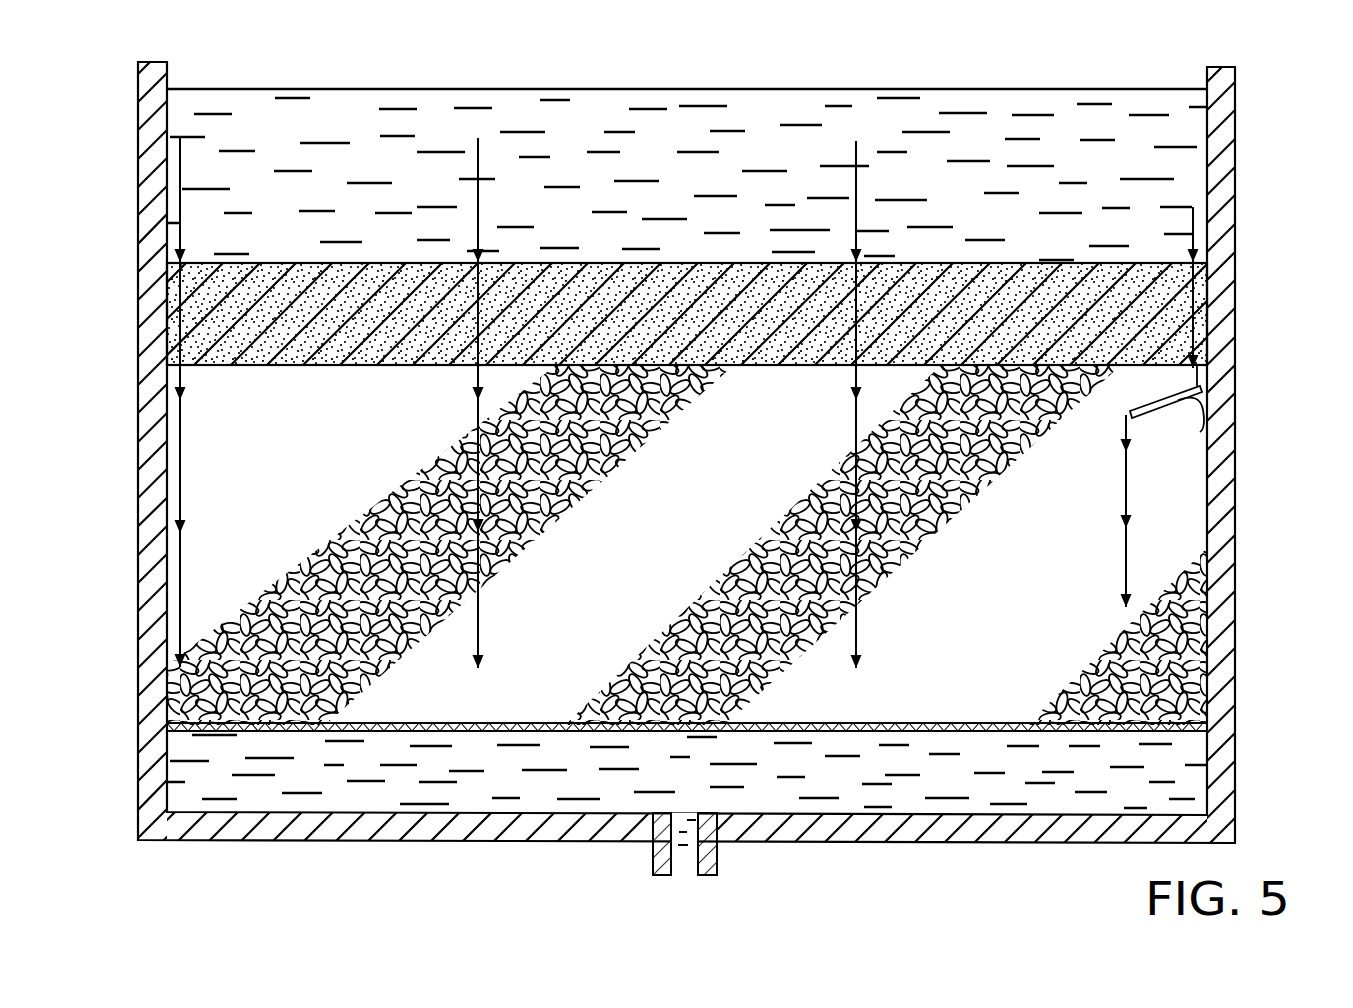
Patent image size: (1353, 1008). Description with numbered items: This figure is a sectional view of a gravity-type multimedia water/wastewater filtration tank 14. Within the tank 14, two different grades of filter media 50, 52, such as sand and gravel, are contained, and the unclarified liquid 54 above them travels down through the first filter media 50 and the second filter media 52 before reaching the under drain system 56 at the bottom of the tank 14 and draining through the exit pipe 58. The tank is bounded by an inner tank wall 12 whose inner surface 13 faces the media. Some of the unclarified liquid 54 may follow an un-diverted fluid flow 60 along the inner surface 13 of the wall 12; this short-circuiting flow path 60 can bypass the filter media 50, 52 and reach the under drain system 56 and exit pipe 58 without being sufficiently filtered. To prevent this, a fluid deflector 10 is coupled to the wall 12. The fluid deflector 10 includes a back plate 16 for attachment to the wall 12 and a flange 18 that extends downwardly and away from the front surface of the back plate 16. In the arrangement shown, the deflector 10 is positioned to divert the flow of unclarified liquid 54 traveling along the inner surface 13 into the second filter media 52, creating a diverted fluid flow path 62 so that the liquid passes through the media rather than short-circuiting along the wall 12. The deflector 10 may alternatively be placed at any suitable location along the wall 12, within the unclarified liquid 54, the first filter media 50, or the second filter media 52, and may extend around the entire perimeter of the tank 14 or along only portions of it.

The fluid deflector 10 is at (1163, 393).
The inner tank wall 12 is at (150, 114).
The inner surface 13 is at (167, 126).
The water/wastewater filtration tank 14 is at (698, 459).
The back plate 16 is at (1203, 363).
The flange 18 is at (1152, 417).
The first filter media 50 is at (172, 302).
The second filter media 52 is at (960, 520).
The unclarified liquid 54 is at (997, 123).
The under drain system 56 is at (907, 722).
The exit pipe 58 is at (718, 858).
The un-diverted fluid flow 60 is at (182, 478).
The diverted fluid flow path 62 is at (1126, 496).